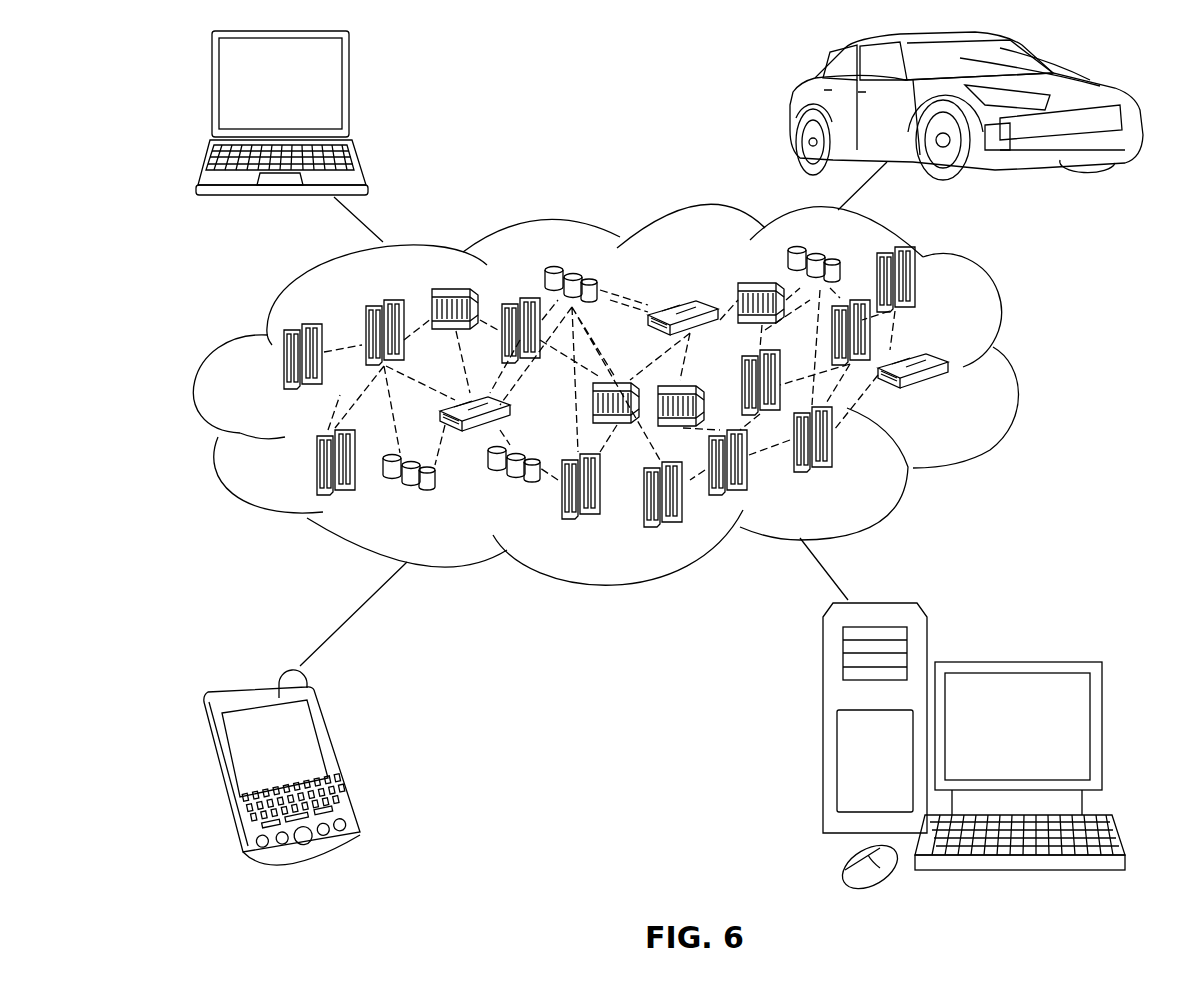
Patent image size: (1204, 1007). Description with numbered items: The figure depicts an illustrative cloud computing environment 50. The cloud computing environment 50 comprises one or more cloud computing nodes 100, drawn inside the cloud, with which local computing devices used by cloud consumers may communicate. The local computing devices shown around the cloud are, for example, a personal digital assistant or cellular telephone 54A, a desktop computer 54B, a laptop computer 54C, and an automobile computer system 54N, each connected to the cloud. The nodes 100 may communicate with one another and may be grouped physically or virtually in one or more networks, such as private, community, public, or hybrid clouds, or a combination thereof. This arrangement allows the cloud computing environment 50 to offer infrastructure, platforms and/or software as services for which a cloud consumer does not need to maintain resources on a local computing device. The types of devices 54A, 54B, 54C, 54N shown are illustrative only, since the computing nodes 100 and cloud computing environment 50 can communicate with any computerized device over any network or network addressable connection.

The cloud computing environment 50 is at (1017, 372).
The cloud computing nodes 100 is at (957, 398).
The personal digital assistant or cellular telephone 54A is at (340, 758).
The desktop computer 54B is at (1013, 660).
The laptop computer 54C is at (352, 92).
The automobile computer system 54N is at (794, 108).